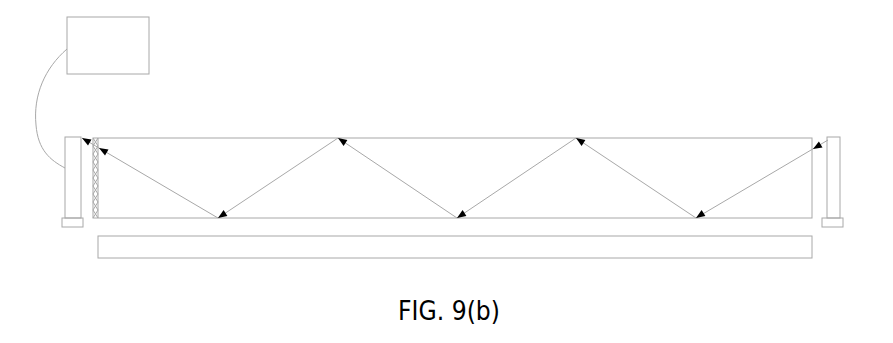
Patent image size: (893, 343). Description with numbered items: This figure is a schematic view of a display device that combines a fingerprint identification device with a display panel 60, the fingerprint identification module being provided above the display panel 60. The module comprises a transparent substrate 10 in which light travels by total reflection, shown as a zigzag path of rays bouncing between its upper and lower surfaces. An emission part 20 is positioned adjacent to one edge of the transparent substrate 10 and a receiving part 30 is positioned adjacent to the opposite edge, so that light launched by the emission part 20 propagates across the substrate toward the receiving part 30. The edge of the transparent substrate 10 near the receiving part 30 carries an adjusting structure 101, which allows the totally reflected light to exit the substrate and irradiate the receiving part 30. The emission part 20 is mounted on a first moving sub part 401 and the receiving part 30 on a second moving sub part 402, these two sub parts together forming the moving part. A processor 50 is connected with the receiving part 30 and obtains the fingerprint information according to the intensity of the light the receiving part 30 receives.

The transparent substrate 10 is at (778, 153).
The adjusting structure 101 is at (97, 138).
The emission part 20 is at (836, 143).
The receiving part 30 is at (73, 147).
The first moving sub part 401 is at (843, 223).
The second moving sub part 402 is at (62, 223).
The processor 50 is at (130, 53).
The display panel 60 is at (785, 252).